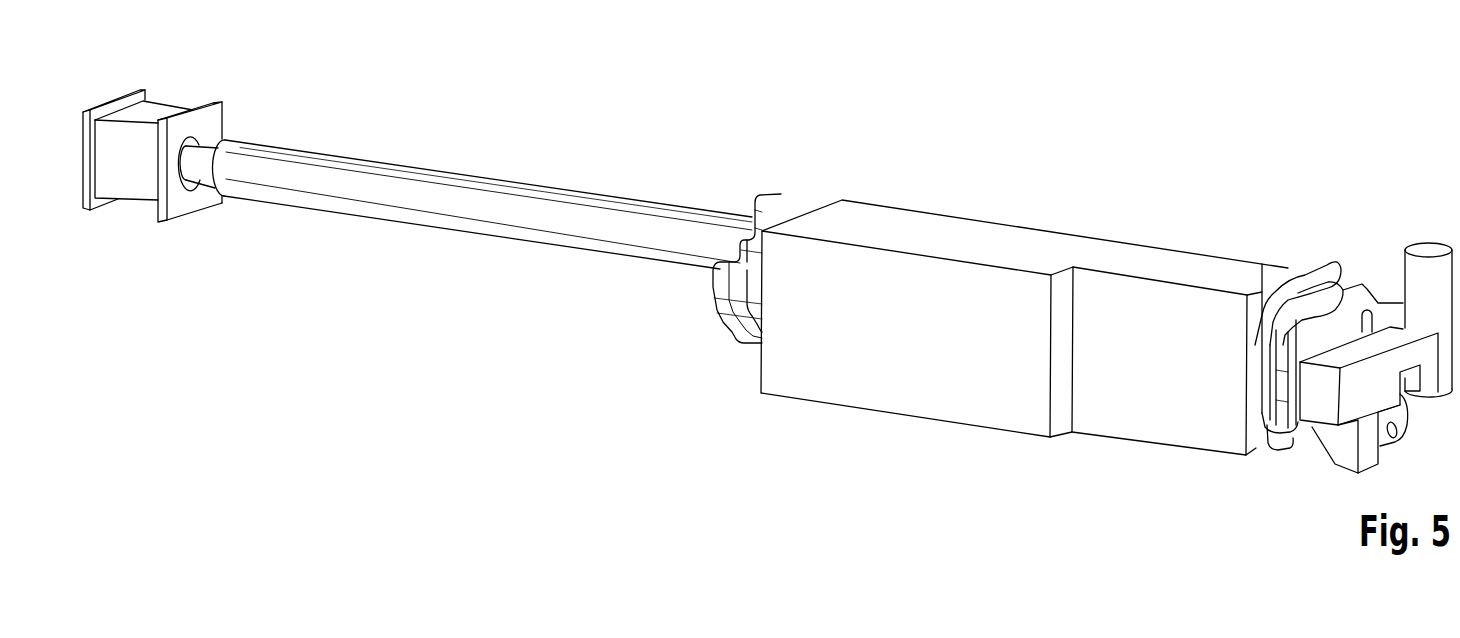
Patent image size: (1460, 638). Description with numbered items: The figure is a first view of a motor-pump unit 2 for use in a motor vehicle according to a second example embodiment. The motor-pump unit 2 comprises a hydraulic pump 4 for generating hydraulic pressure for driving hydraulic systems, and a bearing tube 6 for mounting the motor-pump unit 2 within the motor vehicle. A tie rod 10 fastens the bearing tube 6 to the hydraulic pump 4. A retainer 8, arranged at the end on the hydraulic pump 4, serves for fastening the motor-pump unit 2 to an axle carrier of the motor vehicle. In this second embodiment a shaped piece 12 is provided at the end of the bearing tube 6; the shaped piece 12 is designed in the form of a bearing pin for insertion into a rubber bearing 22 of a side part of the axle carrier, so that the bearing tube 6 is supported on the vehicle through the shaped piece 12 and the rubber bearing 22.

The motor-pump unit 2 is at (1122, 160).
The hydraulic pump 4 is at (998, 251).
The bearing tube 6 is at (438, 187).
The retainer 8 is at (1430, 243).
The tie rod 10 is at (722, 290).
The shaped piece 12 is at (208, 141).
The rubber bearing 22 is at (160, 118).